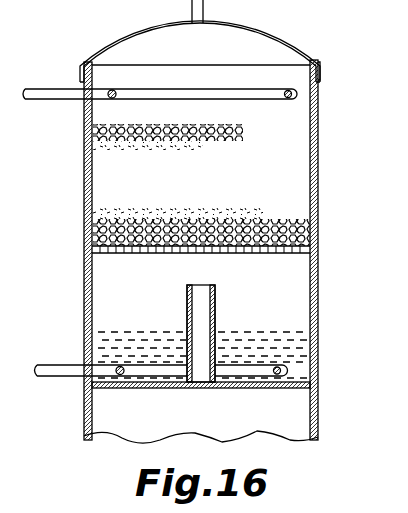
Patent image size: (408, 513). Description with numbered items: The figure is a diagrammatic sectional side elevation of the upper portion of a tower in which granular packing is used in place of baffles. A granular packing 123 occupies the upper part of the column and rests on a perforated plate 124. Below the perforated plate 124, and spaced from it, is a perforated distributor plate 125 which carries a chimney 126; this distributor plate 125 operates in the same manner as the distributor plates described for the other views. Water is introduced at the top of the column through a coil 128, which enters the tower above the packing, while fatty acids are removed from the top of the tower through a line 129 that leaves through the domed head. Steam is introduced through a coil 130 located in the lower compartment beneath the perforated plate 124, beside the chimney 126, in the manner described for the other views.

The granular packing 123 is at (96, 136).
The perforated plate 124 is at (290, 250).
The perforated distributor plate 125 is at (300, 390).
The chimney 126 is at (215, 318).
The coil 128 is at (258, 88).
The line 129 is at (204, 10).
The coil 130 is at (184, 378).